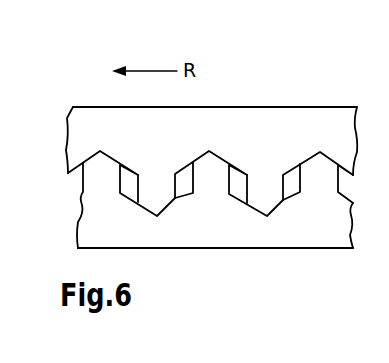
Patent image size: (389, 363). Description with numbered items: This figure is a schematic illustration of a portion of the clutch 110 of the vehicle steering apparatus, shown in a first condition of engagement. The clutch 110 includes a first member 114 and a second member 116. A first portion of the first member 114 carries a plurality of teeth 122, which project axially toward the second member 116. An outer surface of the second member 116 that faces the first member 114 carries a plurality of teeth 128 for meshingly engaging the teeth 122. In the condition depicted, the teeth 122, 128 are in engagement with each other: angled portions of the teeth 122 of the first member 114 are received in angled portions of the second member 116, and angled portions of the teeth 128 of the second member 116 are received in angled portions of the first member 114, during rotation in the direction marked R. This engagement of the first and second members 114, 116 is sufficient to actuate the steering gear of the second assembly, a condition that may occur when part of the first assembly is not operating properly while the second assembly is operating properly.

The clutch 110 is at (90, 101).
The first member 114 is at (232, 130).
The second member 116 is at (208, 223).
The teeth 122 is at (165, 178).
The teeth 128 is at (212, 173).